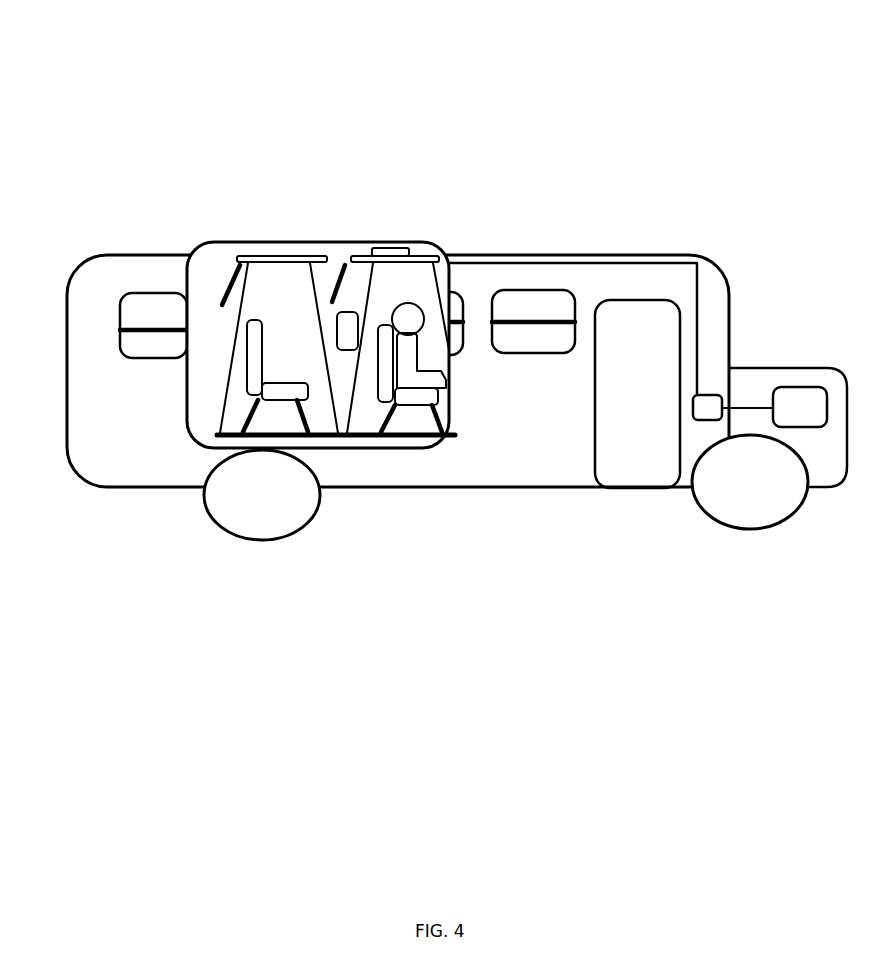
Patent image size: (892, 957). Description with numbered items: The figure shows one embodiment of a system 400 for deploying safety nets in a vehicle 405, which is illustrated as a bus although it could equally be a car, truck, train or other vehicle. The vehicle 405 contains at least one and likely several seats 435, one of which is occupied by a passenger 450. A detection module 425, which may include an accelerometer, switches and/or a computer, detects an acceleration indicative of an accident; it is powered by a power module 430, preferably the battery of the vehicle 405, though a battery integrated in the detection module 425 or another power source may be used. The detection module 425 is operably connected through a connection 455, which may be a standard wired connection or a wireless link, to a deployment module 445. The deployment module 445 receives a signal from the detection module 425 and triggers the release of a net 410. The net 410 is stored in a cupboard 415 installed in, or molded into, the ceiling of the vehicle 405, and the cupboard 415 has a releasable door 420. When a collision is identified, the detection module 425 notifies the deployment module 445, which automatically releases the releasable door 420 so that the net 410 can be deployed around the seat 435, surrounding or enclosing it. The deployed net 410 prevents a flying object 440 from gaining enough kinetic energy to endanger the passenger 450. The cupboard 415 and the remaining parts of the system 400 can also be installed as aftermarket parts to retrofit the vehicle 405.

The system 400 is at (716, 96).
The vehicle 405 is at (110, 487).
The net 410 is at (350, 413).
The cupboard 415 is at (413, 253).
The releasable door 420 is at (337, 275).
The detection module 425 is at (721, 395).
The power module 430 is at (798, 407).
The seat 435 is at (410, 413).
The object 440 is at (353, 311).
The deployment module 445 is at (399, 244).
The passenger 450 is at (438, 381).
The connection 455 is at (607, 262).